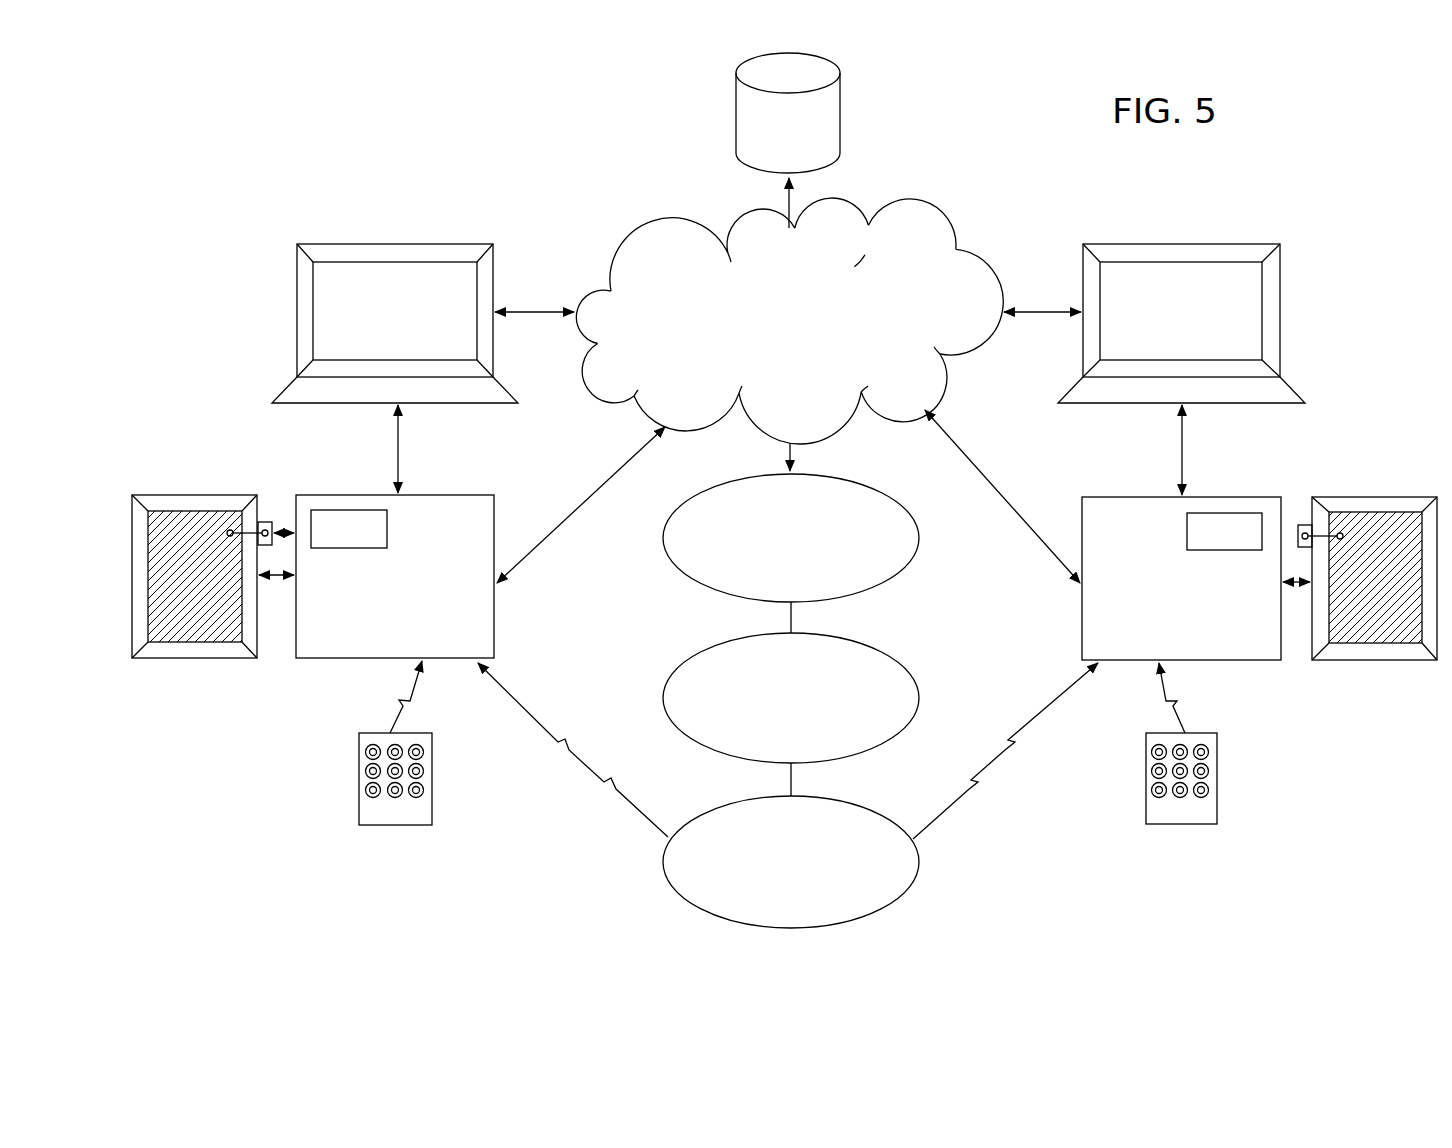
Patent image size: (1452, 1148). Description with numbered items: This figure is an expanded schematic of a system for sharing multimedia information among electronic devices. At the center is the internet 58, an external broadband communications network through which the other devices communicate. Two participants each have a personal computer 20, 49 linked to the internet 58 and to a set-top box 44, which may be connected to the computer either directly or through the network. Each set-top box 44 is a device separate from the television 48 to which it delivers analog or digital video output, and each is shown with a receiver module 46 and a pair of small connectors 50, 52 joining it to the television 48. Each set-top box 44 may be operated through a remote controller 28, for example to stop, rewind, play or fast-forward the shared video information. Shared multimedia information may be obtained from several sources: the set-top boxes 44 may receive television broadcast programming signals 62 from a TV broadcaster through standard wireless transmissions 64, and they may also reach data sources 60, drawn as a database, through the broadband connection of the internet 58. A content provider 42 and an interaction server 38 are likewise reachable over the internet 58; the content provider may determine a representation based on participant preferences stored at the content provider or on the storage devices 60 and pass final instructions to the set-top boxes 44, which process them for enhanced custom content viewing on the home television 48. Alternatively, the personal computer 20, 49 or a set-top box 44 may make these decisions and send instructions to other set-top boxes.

The personal computer 20 is at (297, 312).
The remote control 28 is at (395, 826).
The interaction server 38 is at (913, 558).
The content provider 42 is at (914, 718).
The set-top box 44 is at (317, 660).
The receiver module 46 is at (363, 548).
The television 48 is at (168, 660).
The personal computer 49 is at (1280, 316).
The connector 50 is at (270, 523).
The connector 52 is at (230, 530).
The internet 58 is at (943, 212).
The data sources 60 is at (842, 112).
The television broadcast programming signals 62 is at (914, 883).
The standard wireless transmissions 64 is at (587, 764).